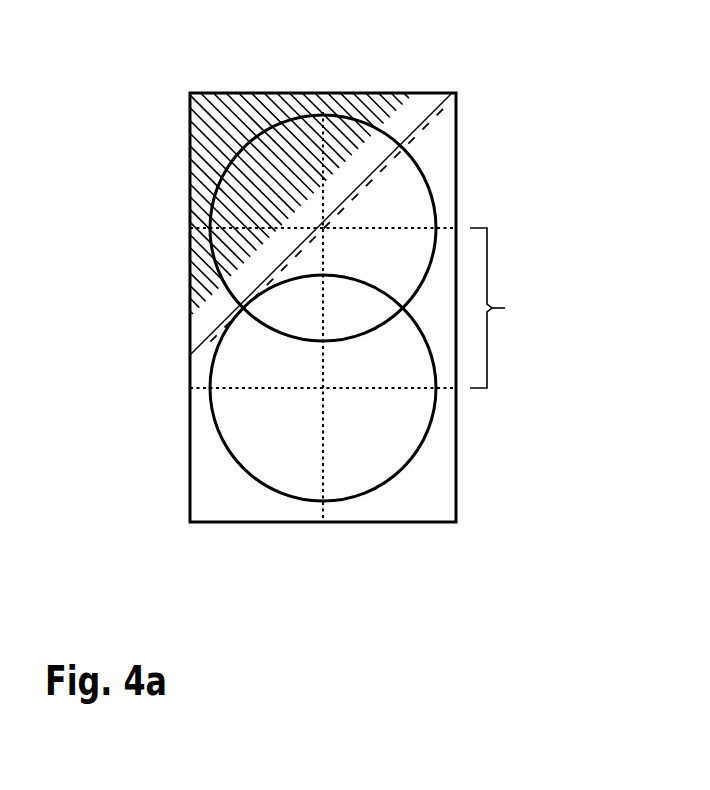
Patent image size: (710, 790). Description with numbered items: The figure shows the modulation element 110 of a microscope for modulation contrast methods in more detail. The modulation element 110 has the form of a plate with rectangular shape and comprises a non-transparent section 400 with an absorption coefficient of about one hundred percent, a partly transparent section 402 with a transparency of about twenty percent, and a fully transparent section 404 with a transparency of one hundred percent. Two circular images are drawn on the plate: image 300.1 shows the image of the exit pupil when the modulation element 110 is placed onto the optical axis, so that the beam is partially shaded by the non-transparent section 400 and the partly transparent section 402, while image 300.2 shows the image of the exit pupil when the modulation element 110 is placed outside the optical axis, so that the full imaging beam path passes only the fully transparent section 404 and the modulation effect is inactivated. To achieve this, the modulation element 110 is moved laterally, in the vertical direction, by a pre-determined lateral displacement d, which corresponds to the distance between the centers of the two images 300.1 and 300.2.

The modulation element 110 is at (497, 81).
The non-transparent section 400 is at (227, 118).
The partly transparent section 402 is at (427, 97).
The transparent section 404 is at (445, 145).
The image of the exit pupil 300.1 is at (431, 195).
The image of the exit pupil 300.2 is at (431, 355).
The pre-determined lateral displacement d is at (504, 308).